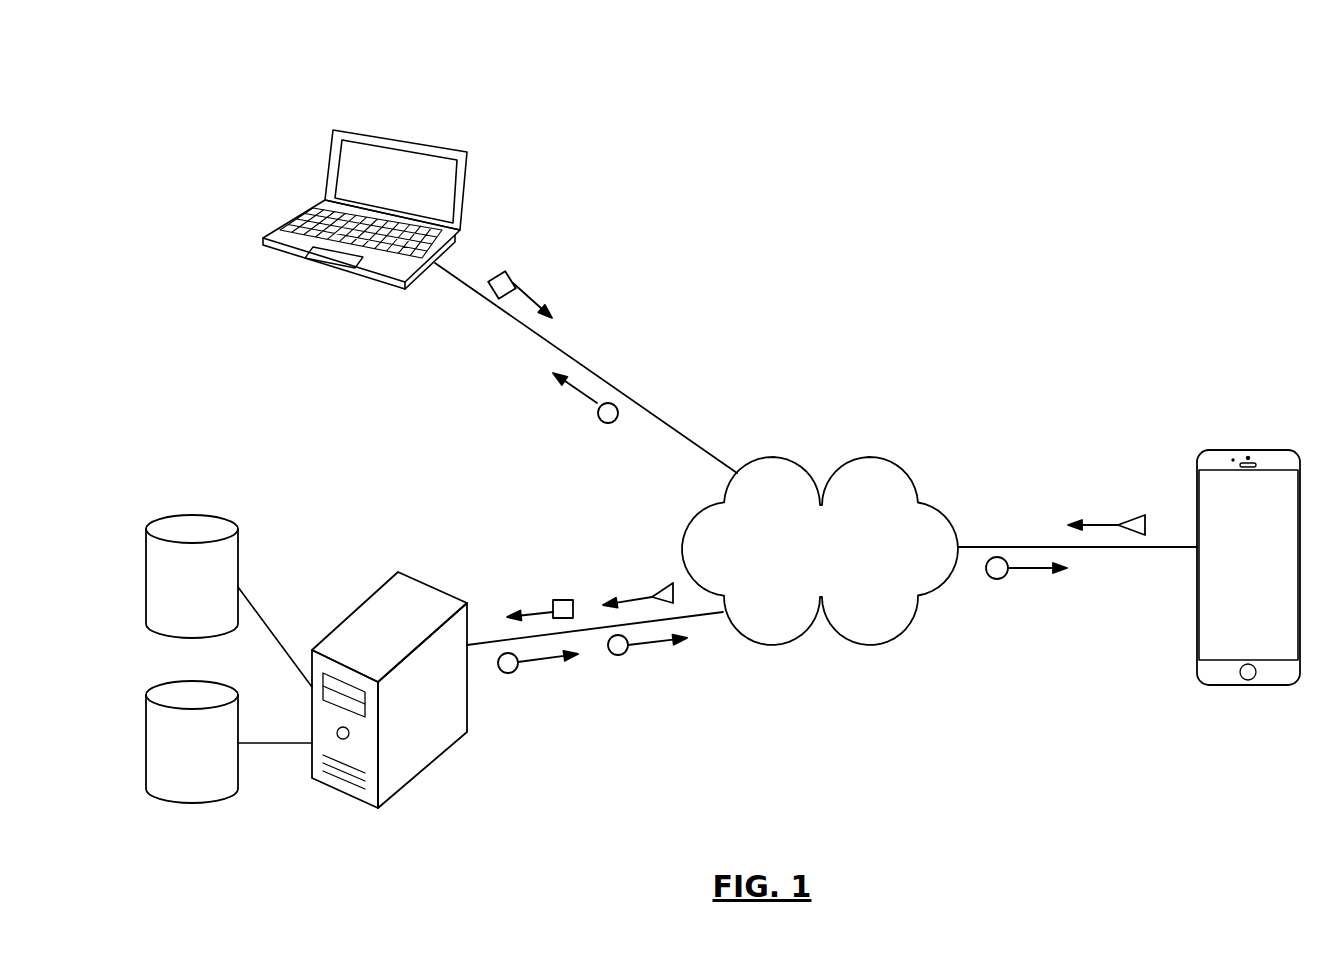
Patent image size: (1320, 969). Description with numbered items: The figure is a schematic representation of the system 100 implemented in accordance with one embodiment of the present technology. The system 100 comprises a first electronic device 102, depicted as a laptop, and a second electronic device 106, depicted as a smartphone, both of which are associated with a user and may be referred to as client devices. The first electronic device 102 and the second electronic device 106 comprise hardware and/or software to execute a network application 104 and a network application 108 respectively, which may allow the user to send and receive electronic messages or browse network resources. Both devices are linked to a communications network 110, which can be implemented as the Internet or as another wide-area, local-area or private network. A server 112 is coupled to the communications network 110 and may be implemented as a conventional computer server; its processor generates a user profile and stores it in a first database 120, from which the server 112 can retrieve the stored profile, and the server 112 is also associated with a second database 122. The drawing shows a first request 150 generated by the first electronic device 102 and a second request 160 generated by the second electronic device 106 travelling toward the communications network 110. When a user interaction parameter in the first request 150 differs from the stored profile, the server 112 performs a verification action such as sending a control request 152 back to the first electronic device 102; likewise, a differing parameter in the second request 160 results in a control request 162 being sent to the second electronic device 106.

The system 100 is at (1122, 162).
The first electronic device 102 is at (397, 140).
The network application 104 is at (396, 181).
The second electronic device 106 is at (1227, 450).
The network application 108 is at (1248, 565).
The communications network 110 is at (820, 551).
The server 112 is at (360, 605).
The first database 120 is at (229, 601).
The second database 122 is at (229, 742).
The first request 150 is at (507, 275).
The control request 152 is at (603, 424).
The second request 160 is at (664, 585).
The control request 162 is at (625, 655).